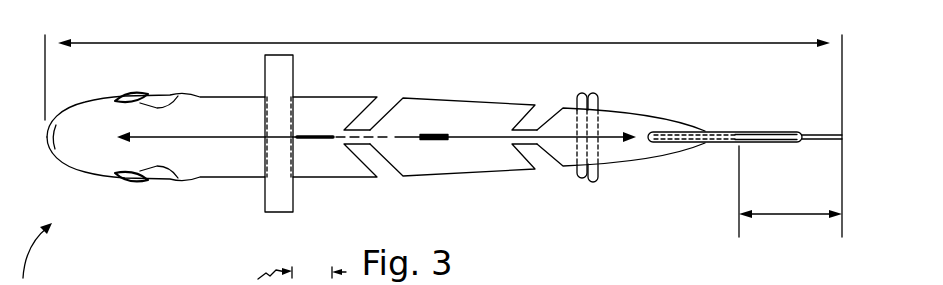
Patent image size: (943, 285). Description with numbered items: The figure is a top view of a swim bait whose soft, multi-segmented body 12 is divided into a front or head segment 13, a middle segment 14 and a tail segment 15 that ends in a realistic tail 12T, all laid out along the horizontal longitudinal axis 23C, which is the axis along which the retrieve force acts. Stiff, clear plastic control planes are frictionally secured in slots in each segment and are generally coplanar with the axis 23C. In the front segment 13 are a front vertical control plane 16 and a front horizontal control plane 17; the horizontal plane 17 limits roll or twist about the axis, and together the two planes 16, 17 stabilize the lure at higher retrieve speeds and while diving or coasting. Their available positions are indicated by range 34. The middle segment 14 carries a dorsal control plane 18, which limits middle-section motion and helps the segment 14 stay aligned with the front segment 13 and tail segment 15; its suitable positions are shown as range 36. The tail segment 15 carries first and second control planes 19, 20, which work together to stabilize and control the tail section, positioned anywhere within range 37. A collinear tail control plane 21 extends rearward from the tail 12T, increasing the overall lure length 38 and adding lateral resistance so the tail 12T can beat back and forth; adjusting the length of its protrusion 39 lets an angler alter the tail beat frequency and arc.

The multi-segmented body 12 is at (99, 160).
The tail 12T is at (772, 110).
The front segment 13 is at (327, 107).
The middle segment 14 is at (487, 110).
The tail segment 15 is at (622, 123).
The front vertical control plane 16 is at (318, 143).
The front horizontal control plane 17 is at (289, 190).
The middle dorsal control plane 18 is at (438, 133).
The first tail control plane 19 is at (578, 103).
The second tail control plane 20 is at (600, 171).
The tail control plane 21 is at (823, 140).
The horizontal longitudinal axis 23C is at (399, 141).
The range of positions for front control planes 34 is at (193, 195).
The range of positions for middle control planes 36 is at (405, 185).
The range of positions for tail control planes 37 is at (567, 200).
The overall lure length 38 is at (585, 43).
The protrusion 39 is at (788, 215).